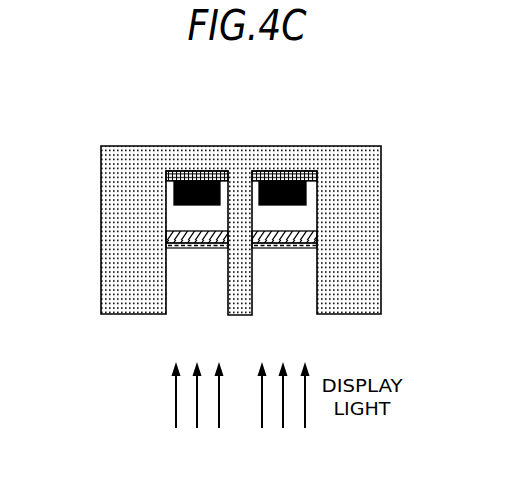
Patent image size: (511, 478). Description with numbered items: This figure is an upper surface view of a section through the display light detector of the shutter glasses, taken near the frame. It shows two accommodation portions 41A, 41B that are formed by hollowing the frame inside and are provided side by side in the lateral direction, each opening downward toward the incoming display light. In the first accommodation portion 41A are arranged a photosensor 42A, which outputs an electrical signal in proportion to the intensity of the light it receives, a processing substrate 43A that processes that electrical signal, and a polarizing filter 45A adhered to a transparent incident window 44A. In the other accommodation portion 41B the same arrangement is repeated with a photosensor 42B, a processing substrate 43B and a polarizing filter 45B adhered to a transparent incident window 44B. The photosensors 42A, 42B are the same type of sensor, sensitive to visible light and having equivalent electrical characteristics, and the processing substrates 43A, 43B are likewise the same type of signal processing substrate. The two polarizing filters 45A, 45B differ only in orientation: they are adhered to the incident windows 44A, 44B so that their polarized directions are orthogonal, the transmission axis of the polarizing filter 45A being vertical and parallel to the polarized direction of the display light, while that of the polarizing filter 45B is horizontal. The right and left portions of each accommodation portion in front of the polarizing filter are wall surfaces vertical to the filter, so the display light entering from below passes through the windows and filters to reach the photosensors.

The accommodation portion 41A is at (197, 311).
The accommodation portion 41B is at (275, 310).
The photosensor 42A is at (176, 190).
The photosensor 42B is at (307, 189).
The processing substrate 43A is at (194, 172).
The processing substrate 43B is at (281, 172).
The transparent incident window 44A is at (170, 237).
The transparent incident window 44B is at (310, 238).
The polarizing filter 45A is at (172, 247).
The polarizing filter 45B is at (308, 247).